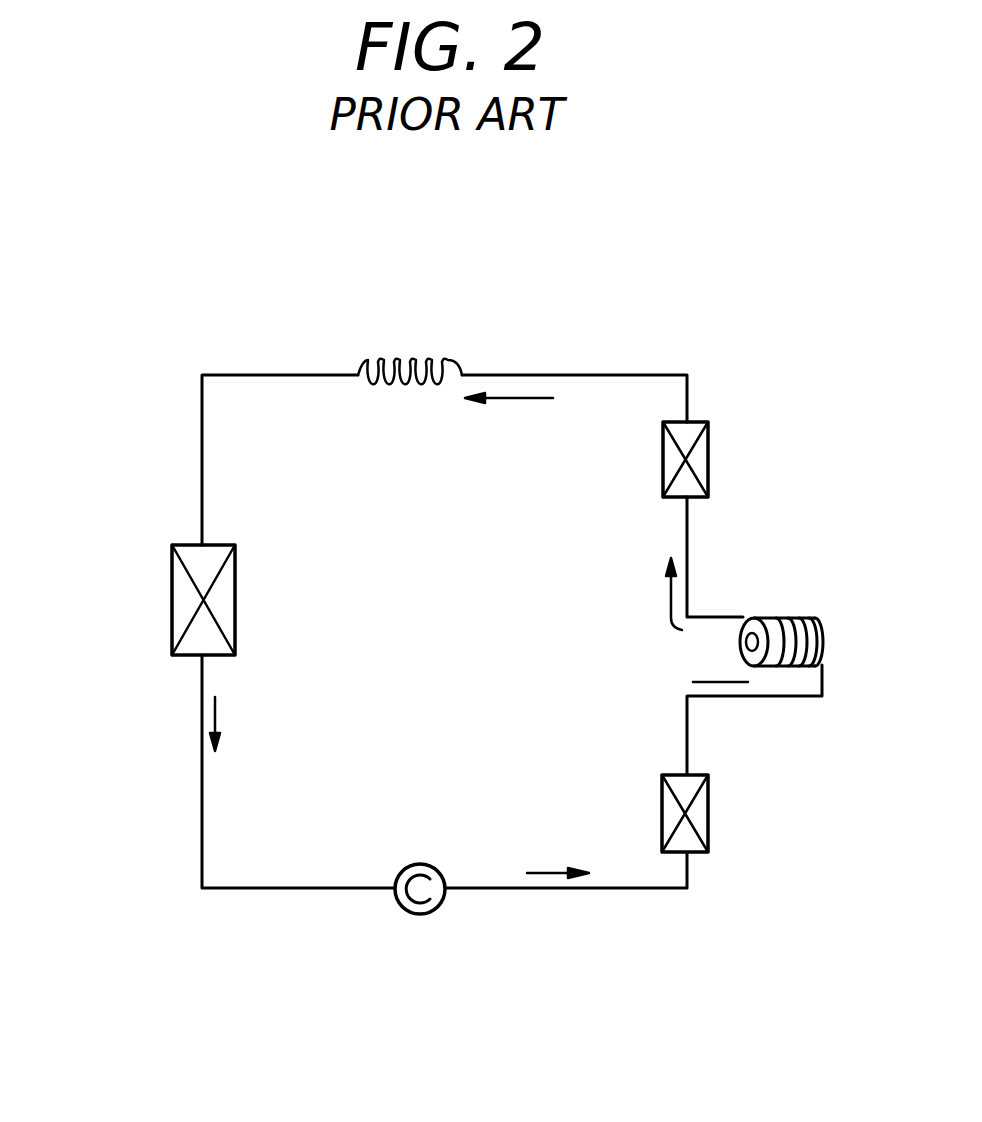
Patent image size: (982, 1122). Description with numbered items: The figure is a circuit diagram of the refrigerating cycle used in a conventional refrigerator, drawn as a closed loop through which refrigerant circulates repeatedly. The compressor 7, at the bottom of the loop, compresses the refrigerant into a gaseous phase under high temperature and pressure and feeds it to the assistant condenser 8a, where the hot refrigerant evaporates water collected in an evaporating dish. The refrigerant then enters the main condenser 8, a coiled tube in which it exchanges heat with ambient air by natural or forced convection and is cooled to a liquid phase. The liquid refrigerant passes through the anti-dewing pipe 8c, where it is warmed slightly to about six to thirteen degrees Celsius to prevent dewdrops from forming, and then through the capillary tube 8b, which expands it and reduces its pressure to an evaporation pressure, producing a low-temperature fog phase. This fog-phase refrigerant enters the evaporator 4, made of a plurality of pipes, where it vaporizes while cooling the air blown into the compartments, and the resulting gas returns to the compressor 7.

The evaporator 4 is at (178, 600).
The compressor 7 is at (415, 913).
The main condenser 8 is at (801, 598).
The assistant condenser 8a is at (708, 810).
The capillary tube 8b is at (408, 365).
The anti-dewing pipe 8c is at (707, 440).